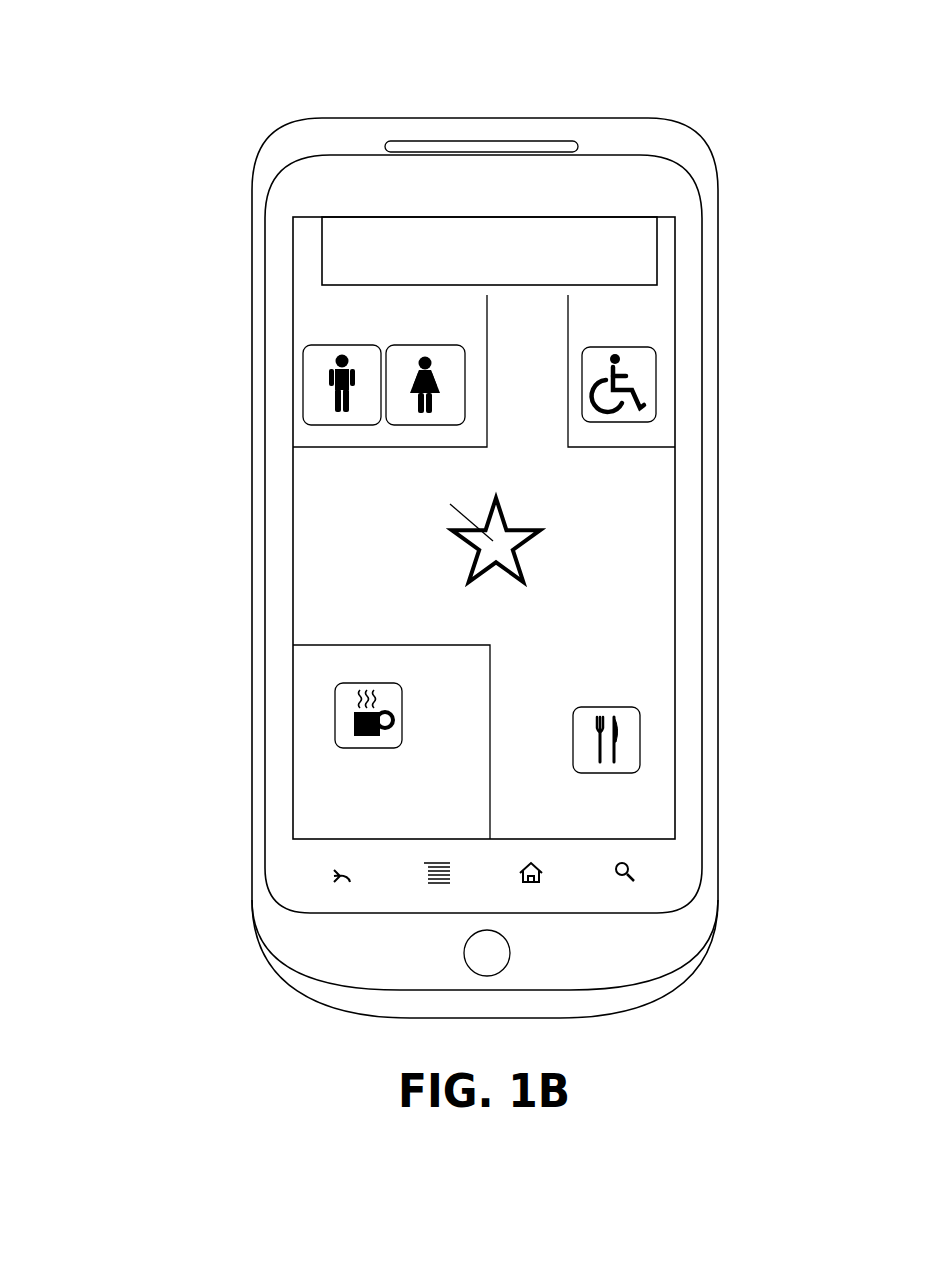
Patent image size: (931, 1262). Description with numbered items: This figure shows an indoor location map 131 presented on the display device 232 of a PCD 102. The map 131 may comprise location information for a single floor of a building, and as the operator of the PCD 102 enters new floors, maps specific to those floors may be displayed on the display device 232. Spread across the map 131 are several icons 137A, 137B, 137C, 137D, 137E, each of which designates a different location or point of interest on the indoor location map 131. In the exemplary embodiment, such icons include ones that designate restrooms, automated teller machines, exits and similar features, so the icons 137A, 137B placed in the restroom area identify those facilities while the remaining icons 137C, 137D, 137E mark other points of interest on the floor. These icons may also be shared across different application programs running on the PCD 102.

The PCD 102 is at (236, 82).
The indoor location map 131 is at (229, 876).
The display device 232 is at (598, 216).
The icon 137A is at (303, 383).
The icon 137B is at (465, 385).
The icon 137C is at (657, 380).
The icon 137D is at (335, 718).
The icon 137E is at (641, 738).